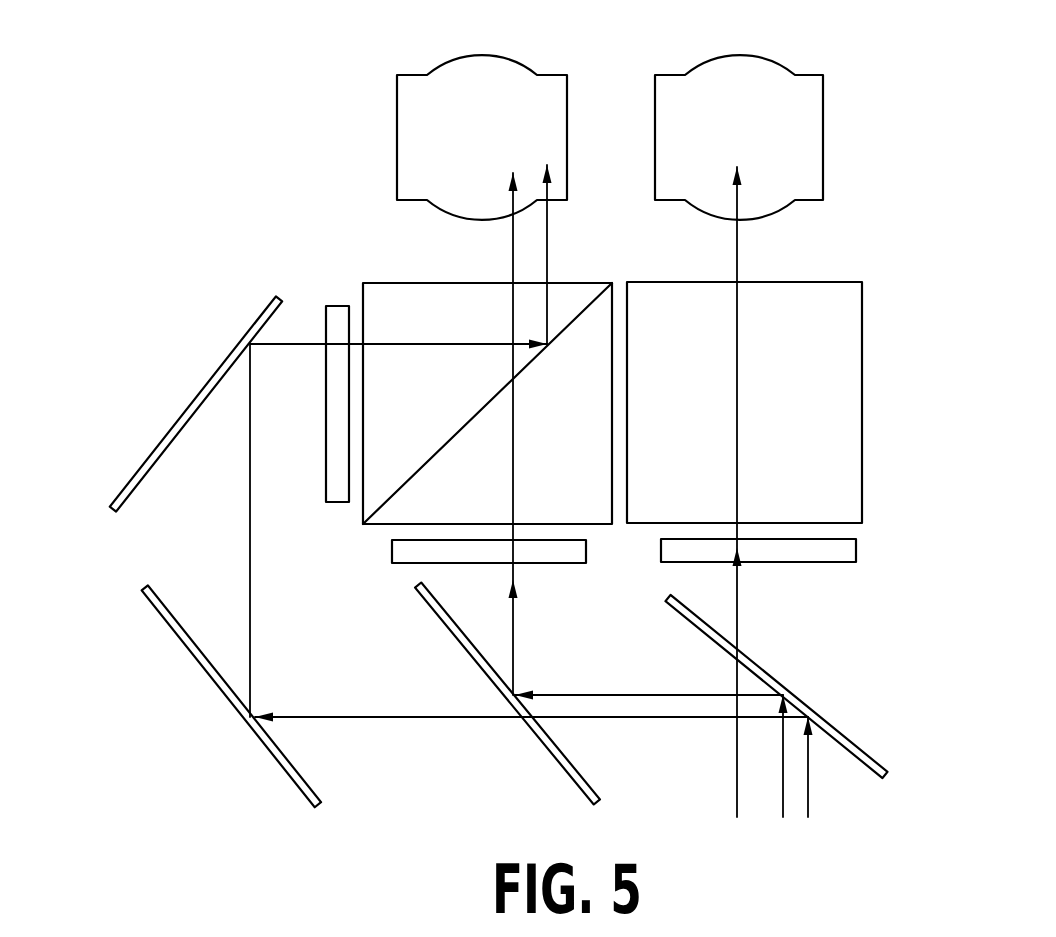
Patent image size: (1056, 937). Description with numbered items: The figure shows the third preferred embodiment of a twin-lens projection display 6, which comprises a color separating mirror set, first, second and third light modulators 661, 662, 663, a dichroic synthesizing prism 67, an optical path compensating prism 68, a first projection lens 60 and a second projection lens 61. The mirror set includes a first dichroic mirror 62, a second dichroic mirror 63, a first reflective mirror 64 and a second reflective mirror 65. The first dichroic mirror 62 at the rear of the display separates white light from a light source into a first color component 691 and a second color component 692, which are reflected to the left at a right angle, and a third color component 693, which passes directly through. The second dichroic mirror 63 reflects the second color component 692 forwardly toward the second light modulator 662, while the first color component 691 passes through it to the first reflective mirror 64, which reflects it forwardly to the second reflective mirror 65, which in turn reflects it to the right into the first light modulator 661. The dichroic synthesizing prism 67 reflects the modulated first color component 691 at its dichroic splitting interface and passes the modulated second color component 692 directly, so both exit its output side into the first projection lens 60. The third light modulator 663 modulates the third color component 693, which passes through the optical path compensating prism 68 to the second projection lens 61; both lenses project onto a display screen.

The twin-lens projection display 6 is at (963, 224).
The first projection lens 60 is at (502, 82).
The second projection lens 61 is at (752, 82).
The first dichroic mirror 62 is at (878, 765).
The second dichroic mirror 63 is at (570, 771).
The first reflective mirror 64 is at (170, 630).
The second reflective mirror 65 is at (168, 432).
The first light modulator 661 is at (335, 308).
The second light modulator 662 is at (400, 554).
The third light modulator 663 is at (843, 553).
The dichroic synthesizing prism 67 is at (400, 300).
The optical path compensating prism 68 is at (832, 333).
The first color component 691 is at (808, 783).
The second color component 692 is at (782, 772).
The third color component 693 is at (737, 762).